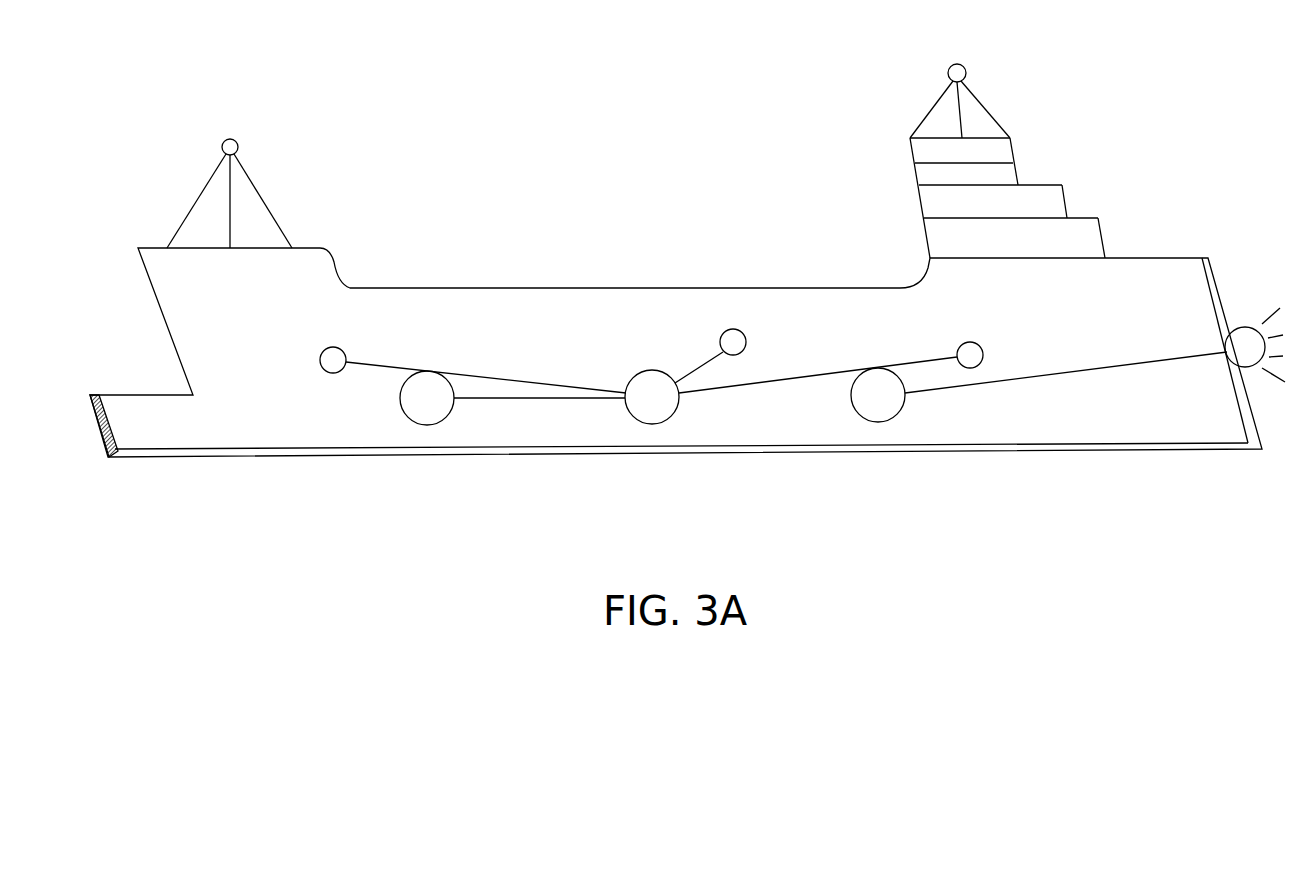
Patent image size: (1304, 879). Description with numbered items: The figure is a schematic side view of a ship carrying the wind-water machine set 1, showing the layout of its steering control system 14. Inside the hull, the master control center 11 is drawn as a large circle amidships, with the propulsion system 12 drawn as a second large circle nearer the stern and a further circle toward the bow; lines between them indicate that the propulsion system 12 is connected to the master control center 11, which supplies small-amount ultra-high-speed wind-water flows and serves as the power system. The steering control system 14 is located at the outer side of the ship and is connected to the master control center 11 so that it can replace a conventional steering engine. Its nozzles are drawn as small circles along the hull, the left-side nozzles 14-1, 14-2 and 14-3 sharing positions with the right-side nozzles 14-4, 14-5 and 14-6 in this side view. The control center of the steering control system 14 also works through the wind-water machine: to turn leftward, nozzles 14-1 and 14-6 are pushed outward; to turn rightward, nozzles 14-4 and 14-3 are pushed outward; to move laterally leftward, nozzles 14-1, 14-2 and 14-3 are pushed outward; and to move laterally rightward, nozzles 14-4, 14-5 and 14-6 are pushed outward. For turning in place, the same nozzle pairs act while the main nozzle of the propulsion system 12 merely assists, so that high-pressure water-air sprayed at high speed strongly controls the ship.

The wind-water machine set 1 is at (377, 47).
The master control center 11 is at (427, 372).
The propulsion system 12 is at (880, 422).
The steering control system 14 is at (652, 372).
The steering nozzle 14-1 is at (293, 434).
The steering nozzle 14-2 is at (761, 291).
The steering nozzle 14-3 is at (1042, 426).
The steering nozzle 14-4 is at (330, 373).
The steering nozzle 14-5 is at (730, 330).
The steering nozzle 14-6 is at (983, 364).